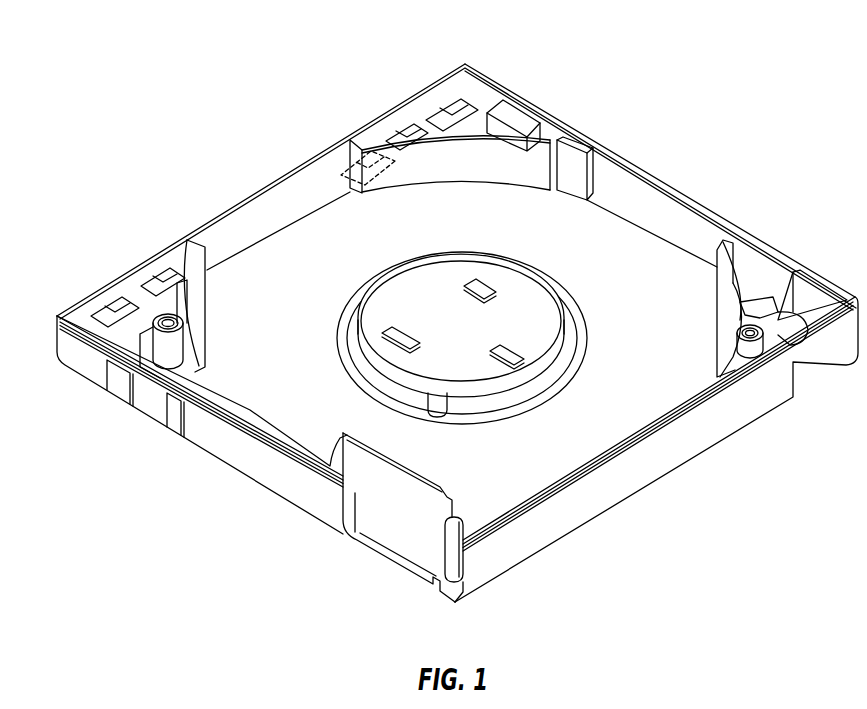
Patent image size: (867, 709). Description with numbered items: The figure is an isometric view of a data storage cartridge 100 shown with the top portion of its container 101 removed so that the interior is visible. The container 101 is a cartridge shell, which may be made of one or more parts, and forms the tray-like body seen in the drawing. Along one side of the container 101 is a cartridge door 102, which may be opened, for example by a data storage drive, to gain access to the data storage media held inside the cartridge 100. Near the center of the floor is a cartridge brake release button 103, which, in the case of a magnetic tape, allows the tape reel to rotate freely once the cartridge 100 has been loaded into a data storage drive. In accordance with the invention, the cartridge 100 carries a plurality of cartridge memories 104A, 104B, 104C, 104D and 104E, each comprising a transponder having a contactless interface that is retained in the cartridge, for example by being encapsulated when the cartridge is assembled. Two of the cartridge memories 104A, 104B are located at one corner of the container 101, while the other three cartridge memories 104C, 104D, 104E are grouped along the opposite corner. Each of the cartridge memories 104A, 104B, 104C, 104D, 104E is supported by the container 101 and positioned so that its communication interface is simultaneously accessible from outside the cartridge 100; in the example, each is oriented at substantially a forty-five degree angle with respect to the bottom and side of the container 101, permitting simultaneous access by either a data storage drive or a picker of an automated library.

The data storage cartridge 100 is at (658, 53).
The container 101 is at (263, 188).
The cartridge door 102 is at (395, 528).
The cartridge brake release button 103 is at (393, 275).
The cartridge memory 104A is at (108, 316).
The cartridge memory 104B is at (158, 283).
The cartridge memory 104C is at (372, 160).
The cartridge memory 104D is at (408, 125).
The cartridge memory 104E is at (453, 104).